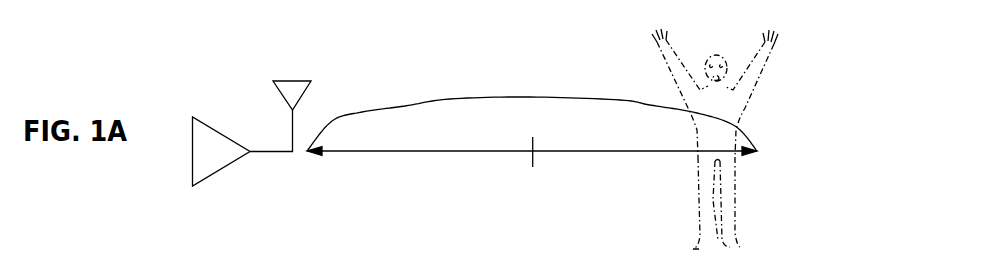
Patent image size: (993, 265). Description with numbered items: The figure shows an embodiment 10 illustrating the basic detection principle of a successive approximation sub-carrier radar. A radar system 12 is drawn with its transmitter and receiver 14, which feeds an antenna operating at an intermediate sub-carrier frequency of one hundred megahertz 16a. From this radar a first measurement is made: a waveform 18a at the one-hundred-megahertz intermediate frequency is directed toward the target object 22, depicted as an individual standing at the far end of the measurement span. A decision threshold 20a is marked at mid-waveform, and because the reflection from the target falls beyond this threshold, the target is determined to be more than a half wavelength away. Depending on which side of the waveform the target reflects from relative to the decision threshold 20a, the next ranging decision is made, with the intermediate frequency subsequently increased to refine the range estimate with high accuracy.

The embodiment 10 is at (880, 19).
The radar system 12 is at (185, 47).
The transmitter and receiver 14 is at (191, 164).
The 100 MHz intermediate frequency 16a is at (308, 84).
The waveform 18a is at (530, 96).
The decision threshold 20a is at (533, 158).
The target object 22 is at (784, 83).